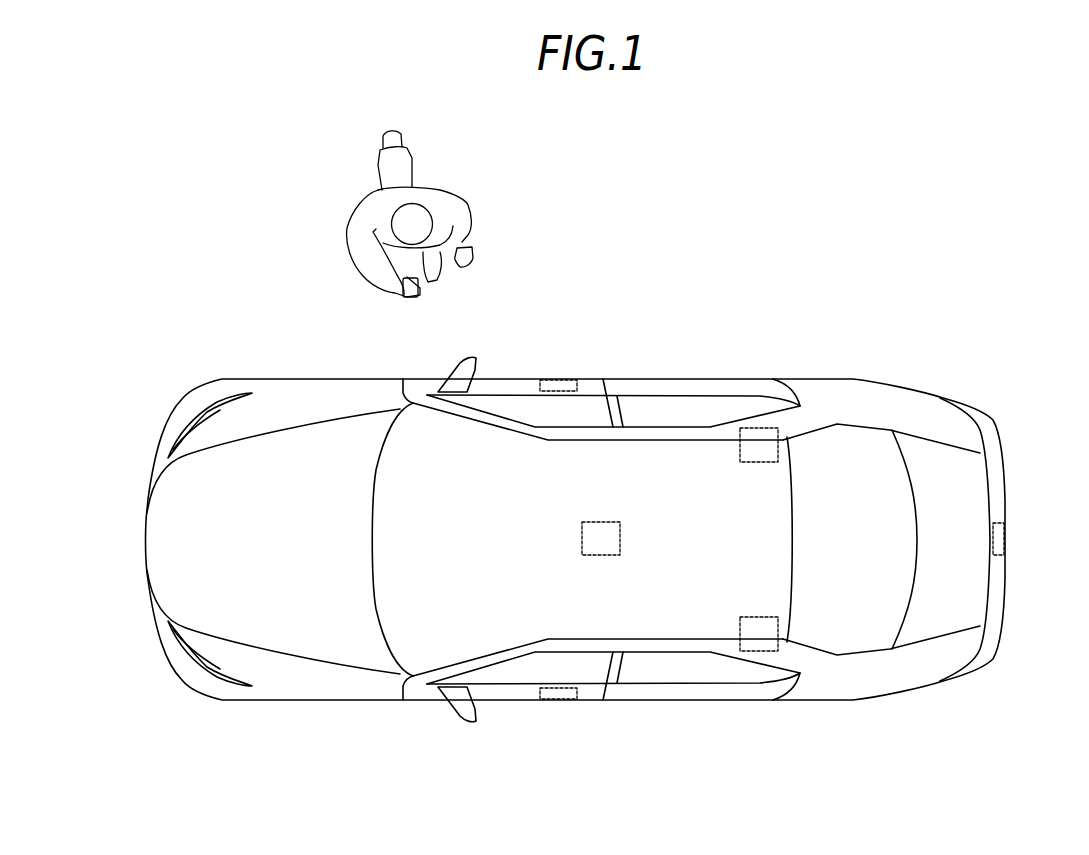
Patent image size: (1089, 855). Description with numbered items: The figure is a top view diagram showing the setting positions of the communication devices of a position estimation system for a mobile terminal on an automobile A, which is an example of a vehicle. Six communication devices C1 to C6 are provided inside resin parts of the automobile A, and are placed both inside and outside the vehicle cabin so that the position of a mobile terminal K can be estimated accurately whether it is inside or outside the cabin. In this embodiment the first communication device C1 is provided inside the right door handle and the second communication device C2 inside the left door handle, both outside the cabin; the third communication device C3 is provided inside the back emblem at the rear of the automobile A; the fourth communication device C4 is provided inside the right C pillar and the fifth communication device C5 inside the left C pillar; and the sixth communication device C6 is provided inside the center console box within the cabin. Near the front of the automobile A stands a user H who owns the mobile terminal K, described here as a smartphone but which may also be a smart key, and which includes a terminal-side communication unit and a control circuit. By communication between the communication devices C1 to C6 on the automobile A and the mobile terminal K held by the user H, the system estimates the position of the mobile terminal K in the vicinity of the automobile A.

The automobile A is at (203, 340).
The user H is at (420, 190).
The mobile terminal K is at (408, 298).
The first communication device C1 is at (577, 383).
The second communication device C2 is at (540, 692).
The third communication device C3 is at (994, 523).
The fourth communication device C4 is at (742, 455).
The fifth communication device C5 is at (760, 617).
The sixth communication device C6 is at (582, 540).